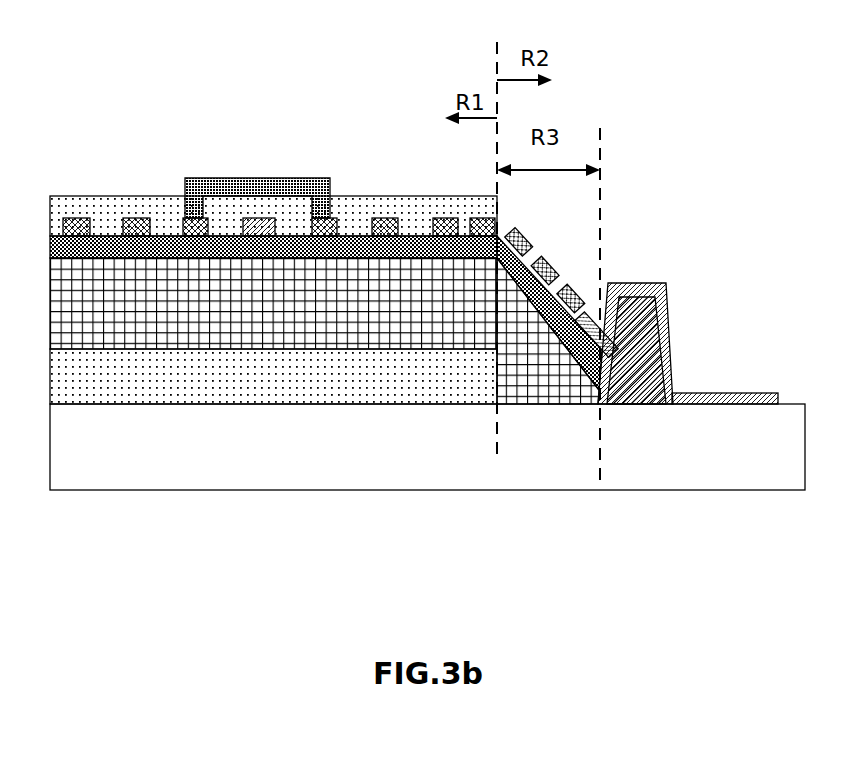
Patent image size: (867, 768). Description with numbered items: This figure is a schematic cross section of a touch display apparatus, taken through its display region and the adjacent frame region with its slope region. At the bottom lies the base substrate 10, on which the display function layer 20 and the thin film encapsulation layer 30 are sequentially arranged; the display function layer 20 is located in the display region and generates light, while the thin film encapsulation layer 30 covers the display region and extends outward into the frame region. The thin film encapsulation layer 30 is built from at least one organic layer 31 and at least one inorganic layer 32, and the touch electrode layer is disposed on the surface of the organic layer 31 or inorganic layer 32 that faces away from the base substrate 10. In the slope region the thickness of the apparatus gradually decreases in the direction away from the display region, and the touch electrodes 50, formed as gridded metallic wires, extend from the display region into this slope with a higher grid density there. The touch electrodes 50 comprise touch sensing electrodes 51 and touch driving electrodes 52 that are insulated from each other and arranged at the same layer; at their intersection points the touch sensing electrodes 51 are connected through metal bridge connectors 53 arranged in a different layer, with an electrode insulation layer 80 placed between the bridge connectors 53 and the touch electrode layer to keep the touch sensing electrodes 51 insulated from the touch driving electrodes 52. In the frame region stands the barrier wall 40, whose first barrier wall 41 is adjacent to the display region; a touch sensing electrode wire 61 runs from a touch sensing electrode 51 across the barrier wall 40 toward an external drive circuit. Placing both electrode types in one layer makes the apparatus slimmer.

The base substrate 10 is at (148, 450).
The display function layer 20 is at (227, 392).
The thin film encapsulation layer 30 is at (326, 415).
The organic layer 31 is at (333, 318).
The inorganic layer 32 is at (409, 243).
The barrier wall 40 is at (642, 332).
The first barrier wall 41 is at (642, 332).
The touch electrode 50 is at (340, 178).
The touch sensing electrode 51 is at (138, 228).
The touch driving electrode 52 is at (258, 226).
The bridge connector 53 is at (257, 138).
The touch sensing electrode wire 61 is at (678, 400).
The electrode insulation layer 80 is at (395, 205).